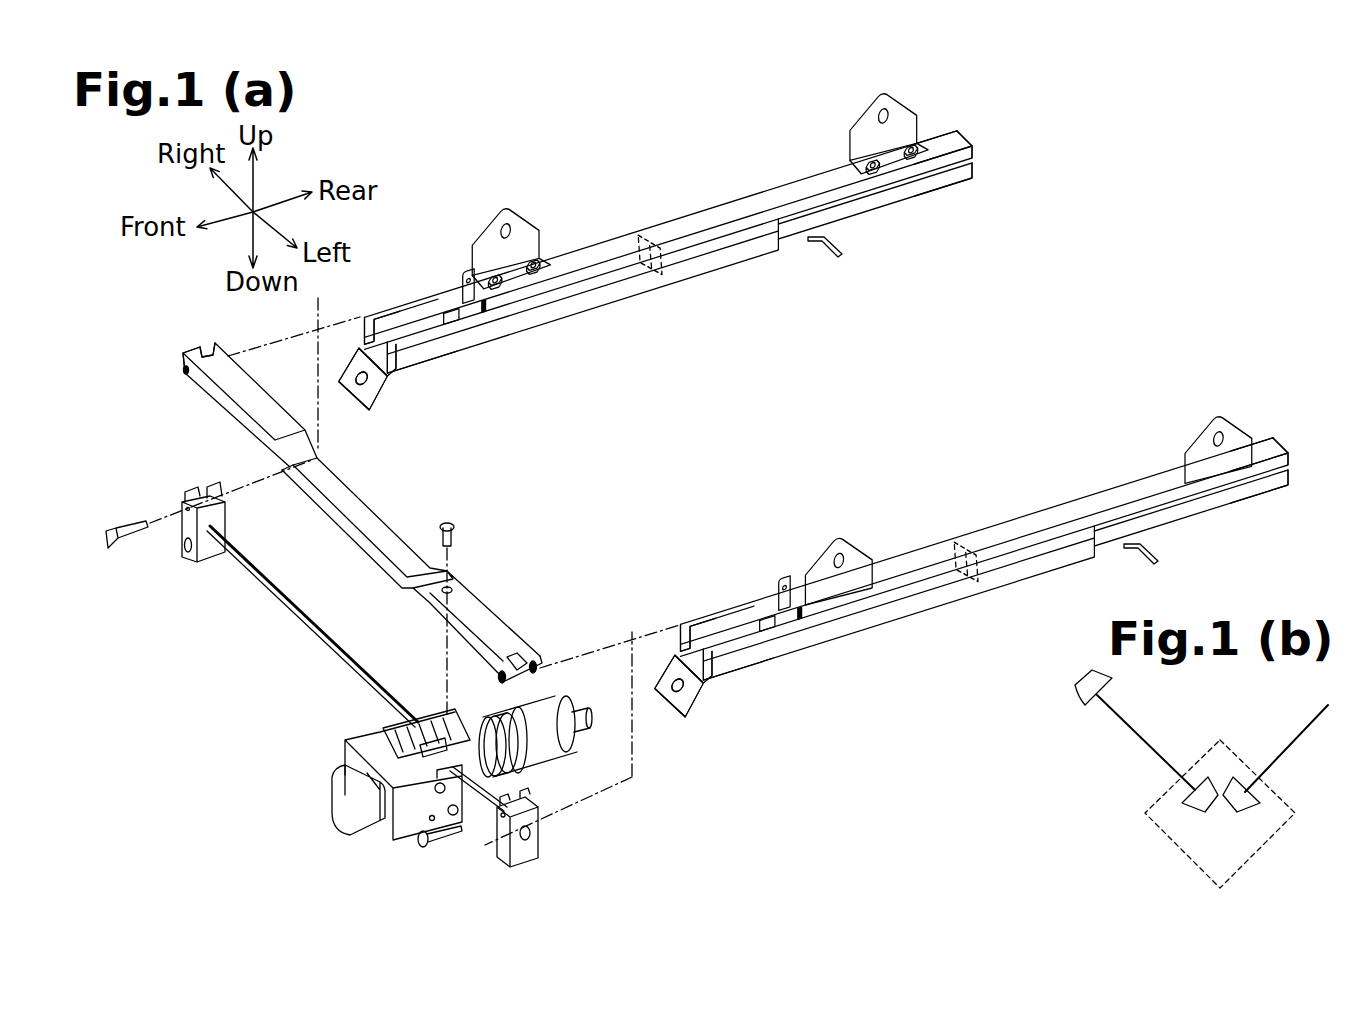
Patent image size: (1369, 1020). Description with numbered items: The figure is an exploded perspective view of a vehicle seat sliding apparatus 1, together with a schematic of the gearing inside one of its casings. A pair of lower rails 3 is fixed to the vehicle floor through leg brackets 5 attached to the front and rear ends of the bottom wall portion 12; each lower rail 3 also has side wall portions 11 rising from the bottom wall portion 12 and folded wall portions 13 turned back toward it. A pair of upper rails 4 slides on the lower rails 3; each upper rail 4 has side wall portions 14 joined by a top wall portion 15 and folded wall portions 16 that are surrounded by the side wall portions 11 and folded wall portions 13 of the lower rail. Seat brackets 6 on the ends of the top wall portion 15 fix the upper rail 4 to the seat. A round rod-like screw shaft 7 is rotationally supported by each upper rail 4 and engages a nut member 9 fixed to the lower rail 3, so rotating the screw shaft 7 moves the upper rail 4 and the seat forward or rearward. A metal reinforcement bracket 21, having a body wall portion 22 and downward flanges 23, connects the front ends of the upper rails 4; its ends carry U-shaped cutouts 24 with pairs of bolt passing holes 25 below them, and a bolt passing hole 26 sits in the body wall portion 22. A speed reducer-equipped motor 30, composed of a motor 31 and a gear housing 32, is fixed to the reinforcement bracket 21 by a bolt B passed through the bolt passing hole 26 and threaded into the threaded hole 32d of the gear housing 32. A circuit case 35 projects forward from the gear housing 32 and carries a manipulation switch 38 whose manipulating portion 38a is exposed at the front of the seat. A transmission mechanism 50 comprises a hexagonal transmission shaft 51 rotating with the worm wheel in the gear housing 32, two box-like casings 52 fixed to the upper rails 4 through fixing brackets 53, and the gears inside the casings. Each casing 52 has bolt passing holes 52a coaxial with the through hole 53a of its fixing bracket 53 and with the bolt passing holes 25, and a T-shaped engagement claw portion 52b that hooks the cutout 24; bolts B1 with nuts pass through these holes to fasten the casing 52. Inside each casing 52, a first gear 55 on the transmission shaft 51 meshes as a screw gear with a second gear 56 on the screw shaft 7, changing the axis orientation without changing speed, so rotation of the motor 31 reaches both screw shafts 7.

In FIG. 1a, the seat slide apparatus 1 is at (819, 412).
In FIG. 1a, the lower rail 3 is at (708, 282).
In FIG. 1a, the upper rail 4 is at (740, 196).
In FIG. 1a, the leg bracket 5 is at (352, 400).
In FIG. 1a, the seat bracket 6 is at (512, 220).
In FIG. 1a, the screw shaft 7 is at (463, 316).
In FIG. 1b, the screw shaft 7 is at (1295, 745).
In FIG. 1a, the nut member 9 is at (640, 235).
In FIG. 1a, the side wall portion 11 is at (360, 318).
In FIG. 1a, the bottom wall portion 12 is at (382, 392).
In FIG. 1a, the folded wall portion 13 is at (385, 318).
In FIG. 1a, the side wall portion 14 is at (978, 144).
In FIG. 1a, the top wall portion 15 is at (945, 131).
In FIG. 1a, the folded wall portion 16 is at (953, 190).
In FIG. 1a, the reinforcement bracket 21 is at (358, 506).
In FIG. 1a, the body wall portion 22 is at (350, 498).
In FIG. 1a, the flange 23 is at (366, 540).
In FIG. 1a, the U-shaped cutout 24 is at (198, 344).
In FIG. 1a, the bolt passing hole 25 is at (184, 370).
In FIG. 1a, the bolt passing hole 26 is at (451, 588).
In FIG. 1a, the speed reducer-equipped motor 30 is at (414, 752).
In FIG. 1a, the motor 31 is at (550, 757).
In FIG. 1a, the gear housing 32 is at (478, 738).
In FIG. 1a, the threaded hole 32d is at (434, 719).
In FIG. 1a, the circuit case 35 is at (348, 743).
In FIG. 1a, the manipulation switch 38 is at (290, 800).
In FIG. 1a, the manipulating portion 38a is at (332, 815).
In FIG. 1a, the transmission mechanism 50 is at (361, 661).
In FIG. 1a, the transmission shaft 51 is at (318, 625).
In FIG. 1b, the transmission shaft 51 is at (1145, 733).
In FIG. 1a, the casing 52 is at (361, 661).
In FIG. 1b, the casing 52 is at (1237, 748).
In FIG. 1a, the bolt passing hole 52a is at (184, 508).
In FIG. 1a, the engagement claw portion 52b is at (200, 487).
In FIG. 1a, the fixing bracket 53 is at (479, 300).
In FIG. 1a, the through hole 53a is at (465, 270).
In FIG. 1b, the first gear 55 is at (1075, 698).
In FIG. 1b, the second gear 56 is at (1242, 810).
In FIG. 1a, the bolt B is at (455, 524).
In FIG. 1a, the bolt B1 is at (118, 540).